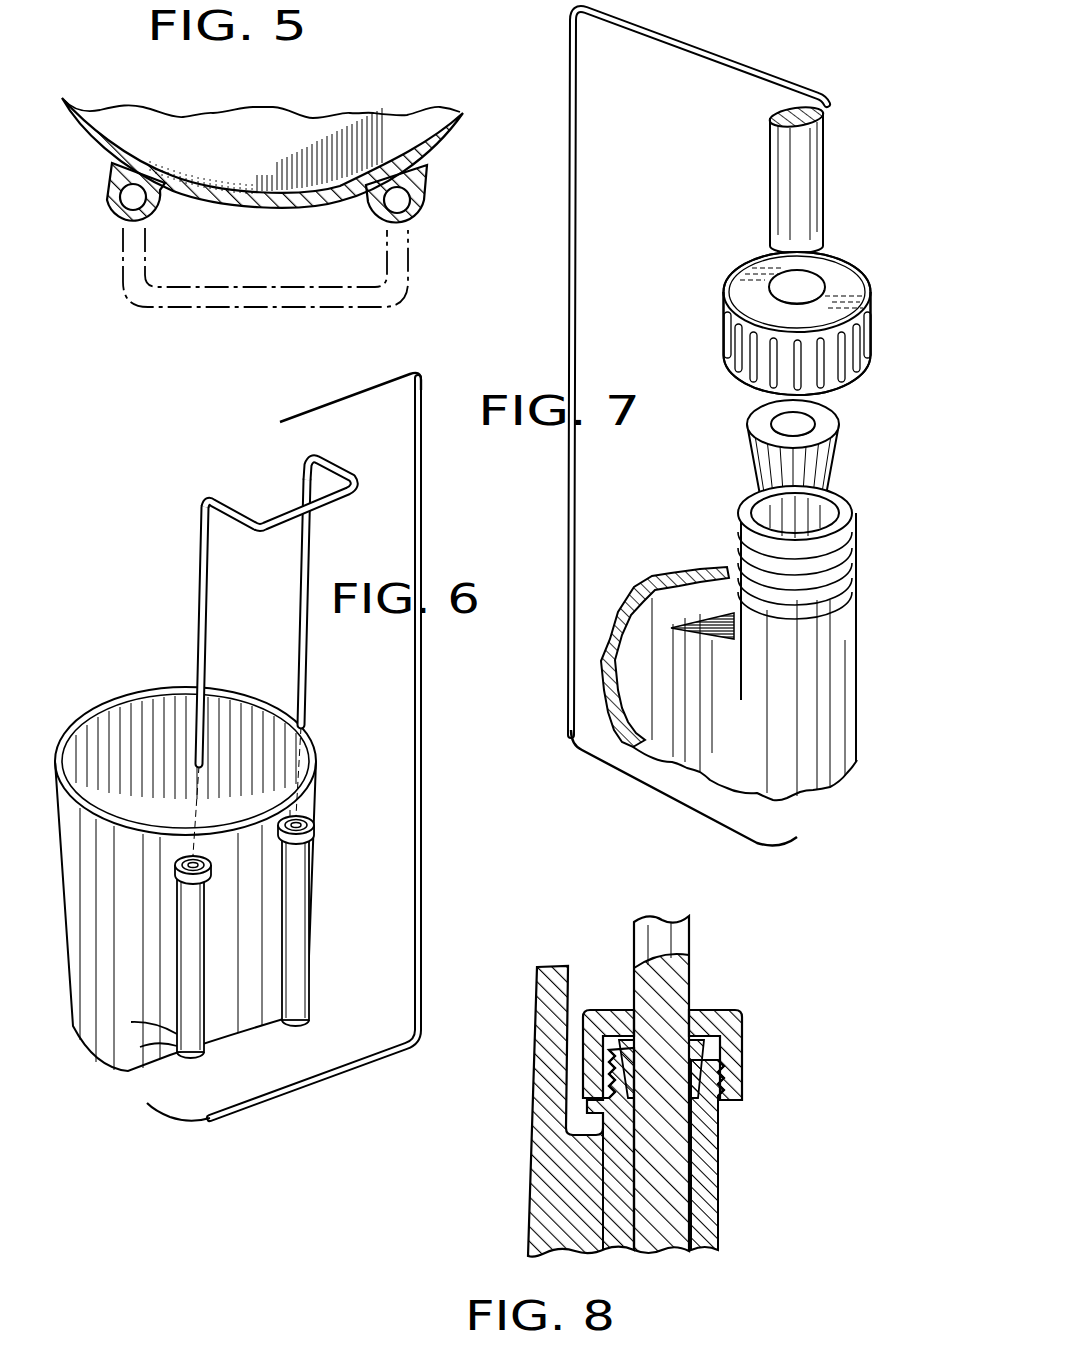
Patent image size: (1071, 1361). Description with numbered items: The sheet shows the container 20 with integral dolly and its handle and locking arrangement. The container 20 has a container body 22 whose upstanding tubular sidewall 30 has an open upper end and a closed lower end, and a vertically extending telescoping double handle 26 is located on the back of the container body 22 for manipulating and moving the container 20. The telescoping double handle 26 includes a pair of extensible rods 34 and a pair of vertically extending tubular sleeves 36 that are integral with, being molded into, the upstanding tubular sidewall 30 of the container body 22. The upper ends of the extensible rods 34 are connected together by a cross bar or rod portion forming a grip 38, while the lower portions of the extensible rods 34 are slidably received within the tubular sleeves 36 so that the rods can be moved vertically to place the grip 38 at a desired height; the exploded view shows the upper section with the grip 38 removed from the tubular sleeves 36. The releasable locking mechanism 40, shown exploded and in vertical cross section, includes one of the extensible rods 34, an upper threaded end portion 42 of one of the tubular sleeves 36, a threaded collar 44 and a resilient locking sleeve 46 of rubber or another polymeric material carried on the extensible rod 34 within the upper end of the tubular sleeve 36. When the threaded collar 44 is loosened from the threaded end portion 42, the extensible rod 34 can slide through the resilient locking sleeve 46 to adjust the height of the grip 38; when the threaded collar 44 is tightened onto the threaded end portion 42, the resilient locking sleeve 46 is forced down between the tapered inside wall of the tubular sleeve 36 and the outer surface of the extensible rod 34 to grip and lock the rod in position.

In FIG. 6, the container 20 is at (126, 538).
In FIG. 5, the container body 22 is at (466, 104).
In FIG. 6, the container body 22 is at (180, 836).
In FIG. 6, the telescoping double handle 26 is at (342, 889).
In FIG. 5, the upstanding tubular sidewall 30 is at (450, 133).
In FIG. 6, the upstanding tubular sidewall 30 is at (100, 922).
In FIG. 7, the upstanding tubular sidewall 30 is at (627, 691).
In FIG. 8, the upstanding tubular sidewall 30 is at (545, 1085).
In FIG. 6, the extensible rods 34 is at (200, 650).
In FIG. 7, the extensible rods 34 is at (780, 185).
In FIG. 5, the tubular sleeves 36 is at (423, 213).
In FIG. 6, the tubular sleeves 36 is at (299, 945).
In FIG. 7, the tubular sleeves 36 is at (845, 716).
In FIG. 8, the tubular sleeves 36 is at (707, 1198).
In FIG. 5, the grip 38 is at (210, 317).
In FIG. 6, the grip 38 is at (268, 505).
In FIG. 7, the releasable locking mechanism 40 is at (740, 441).
In FIG. 8, the releasable locking mechanism 40 is at (726, 1014).
In FIG. 7, the upper threaded end portion 42 is at (736, 543).
In FIG. 8, the upper threaded end portion 42 is at (720, 1118).
In FIG. 7, the threaded collar 44 is at (724, 292).
In FIG. 8, the threaded collar 44 is at (744, 1022).
In FIG. 7, the resilient locking sleeve 46 is at (741, 450).
In FIG. 8, the resilient locking sleeve 46 is at (724, 1060).